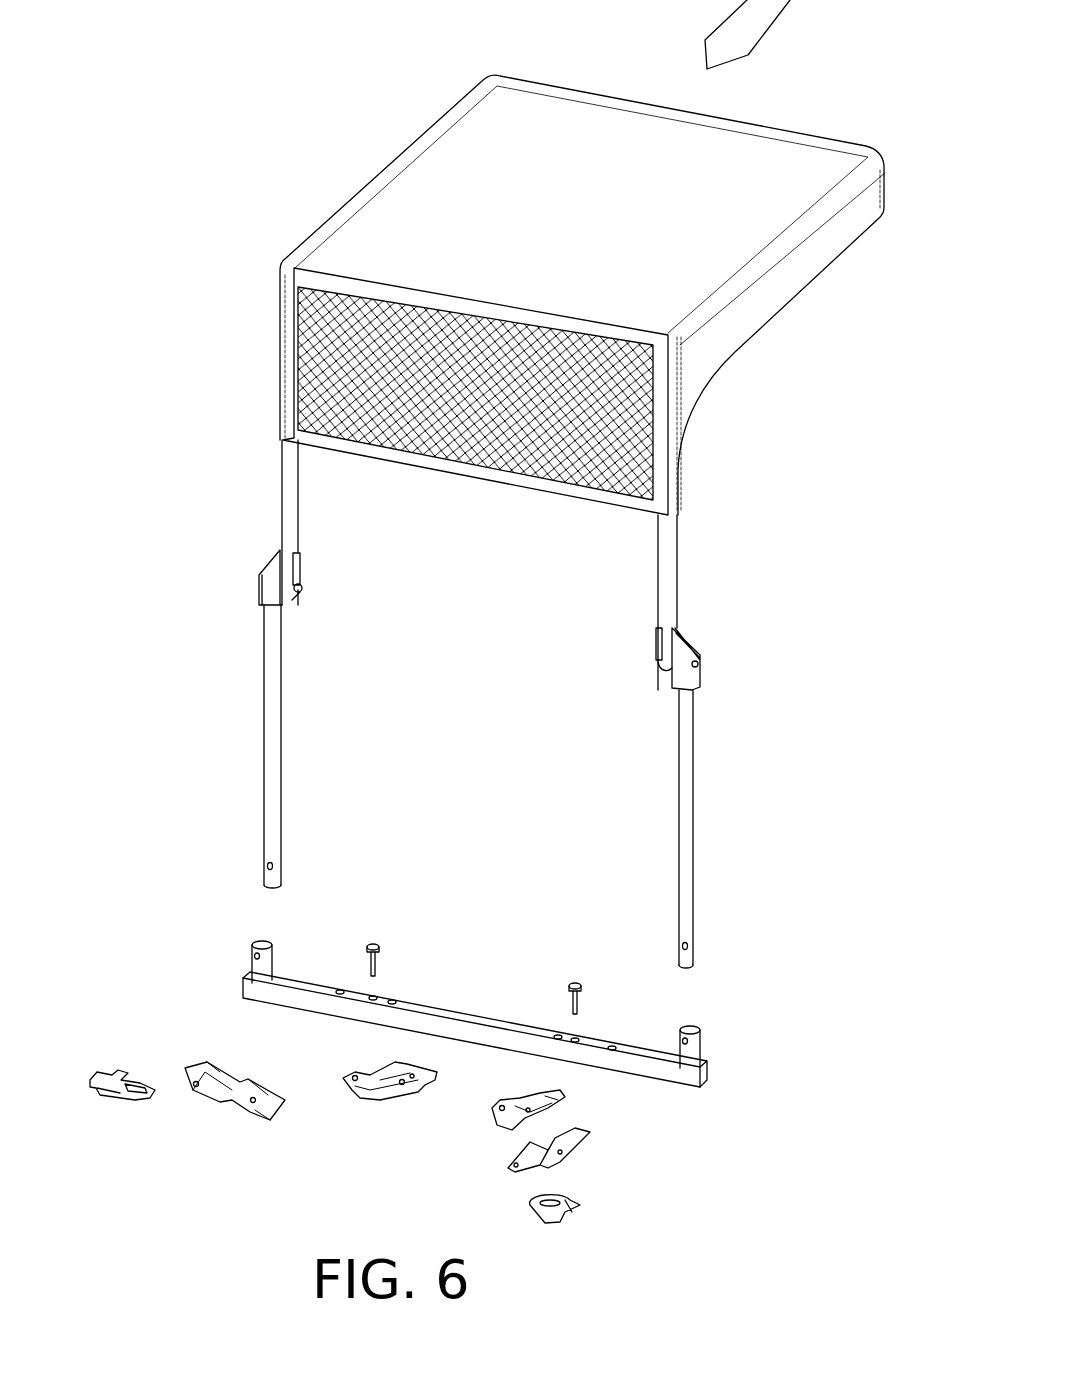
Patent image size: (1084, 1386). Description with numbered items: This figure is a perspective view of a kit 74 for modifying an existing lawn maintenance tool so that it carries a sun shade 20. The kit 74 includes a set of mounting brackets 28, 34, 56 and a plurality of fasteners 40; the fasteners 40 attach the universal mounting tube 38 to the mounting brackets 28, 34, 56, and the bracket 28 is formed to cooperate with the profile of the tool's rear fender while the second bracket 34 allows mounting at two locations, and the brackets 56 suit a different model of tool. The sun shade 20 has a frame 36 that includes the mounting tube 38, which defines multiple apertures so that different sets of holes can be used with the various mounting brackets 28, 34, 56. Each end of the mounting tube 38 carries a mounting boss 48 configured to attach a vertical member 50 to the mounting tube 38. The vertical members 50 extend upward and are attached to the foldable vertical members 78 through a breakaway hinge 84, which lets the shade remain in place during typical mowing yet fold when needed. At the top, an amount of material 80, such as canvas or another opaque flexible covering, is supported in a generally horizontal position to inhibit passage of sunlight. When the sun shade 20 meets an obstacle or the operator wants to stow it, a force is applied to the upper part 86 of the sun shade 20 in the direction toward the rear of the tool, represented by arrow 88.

The kit 74 is at (187, 158).
The arrow 88 is at (768, 35).
The material 80 is at (596, 205).
The upper part 86 is at (803, 372).
The sun shade 20 is at (800, 498).
The foldable vertical members 78 is at (283, 495).
The breakaway hinge 84 is at (268, 588).
The frame 36 is at (210, 567).
The vertical members 50 is at (266, 729).
The mounting tube 38 is at (485, 1012).
The mounting boss 48 is at (252, 962).
The fasteners 40 is at (380, 958).
The bracket 28 is at (112, 1098).
The brackets 56 is at (385, 1100).
The second bracket 34 is at (570, 1145).